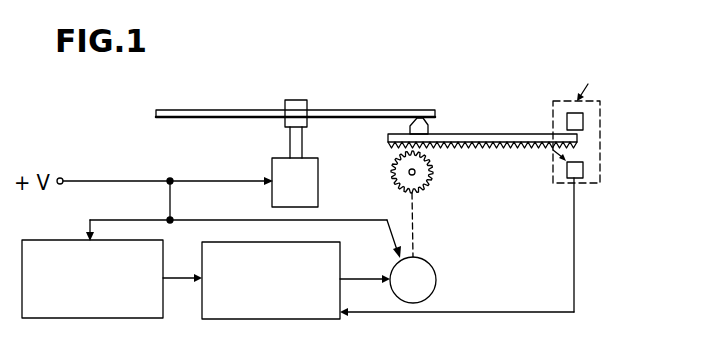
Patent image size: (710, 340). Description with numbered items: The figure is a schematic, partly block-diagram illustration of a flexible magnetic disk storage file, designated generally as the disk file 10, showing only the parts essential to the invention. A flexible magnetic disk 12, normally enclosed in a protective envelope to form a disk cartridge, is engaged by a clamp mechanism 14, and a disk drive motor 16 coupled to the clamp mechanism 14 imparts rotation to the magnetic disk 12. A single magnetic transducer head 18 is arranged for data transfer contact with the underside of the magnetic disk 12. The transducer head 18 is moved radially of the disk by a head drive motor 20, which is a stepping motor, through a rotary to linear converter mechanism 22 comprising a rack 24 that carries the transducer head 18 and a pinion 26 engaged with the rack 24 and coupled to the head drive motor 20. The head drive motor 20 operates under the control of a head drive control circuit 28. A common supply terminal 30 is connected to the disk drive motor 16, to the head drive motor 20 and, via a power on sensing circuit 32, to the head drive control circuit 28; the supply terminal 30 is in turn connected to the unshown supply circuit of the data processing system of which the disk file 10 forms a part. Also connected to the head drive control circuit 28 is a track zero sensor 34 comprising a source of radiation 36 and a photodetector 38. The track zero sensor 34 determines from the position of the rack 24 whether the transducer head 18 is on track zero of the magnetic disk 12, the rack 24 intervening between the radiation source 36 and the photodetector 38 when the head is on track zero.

The disk file 10 is at (96, 145).
The flexible magnetic disk 12 is at (295, 89).
The clamp mechanism 14 is at (295, 109).
The disk drive motor 16 is at (318, 182).
The magnetic transducer head 18 is at (439, 120).
The head drive motor 20 is at (431, 280).
The rotary to linear converter mechanism 22 is at (482, 120).
The rack 24 is at (482, 169).
The pinion 26 is at (431, 172).
The head drive control circuit 28 is at (292, 276).
The supply terminal 30 is at (67, 162).
The power on sensing circuit 32 is at (92, 261).
The track zero sensor 34 is at (583, 184).
The source of radiation 36 is at (602, 122).
The photodetector 38 is at (561, 192).